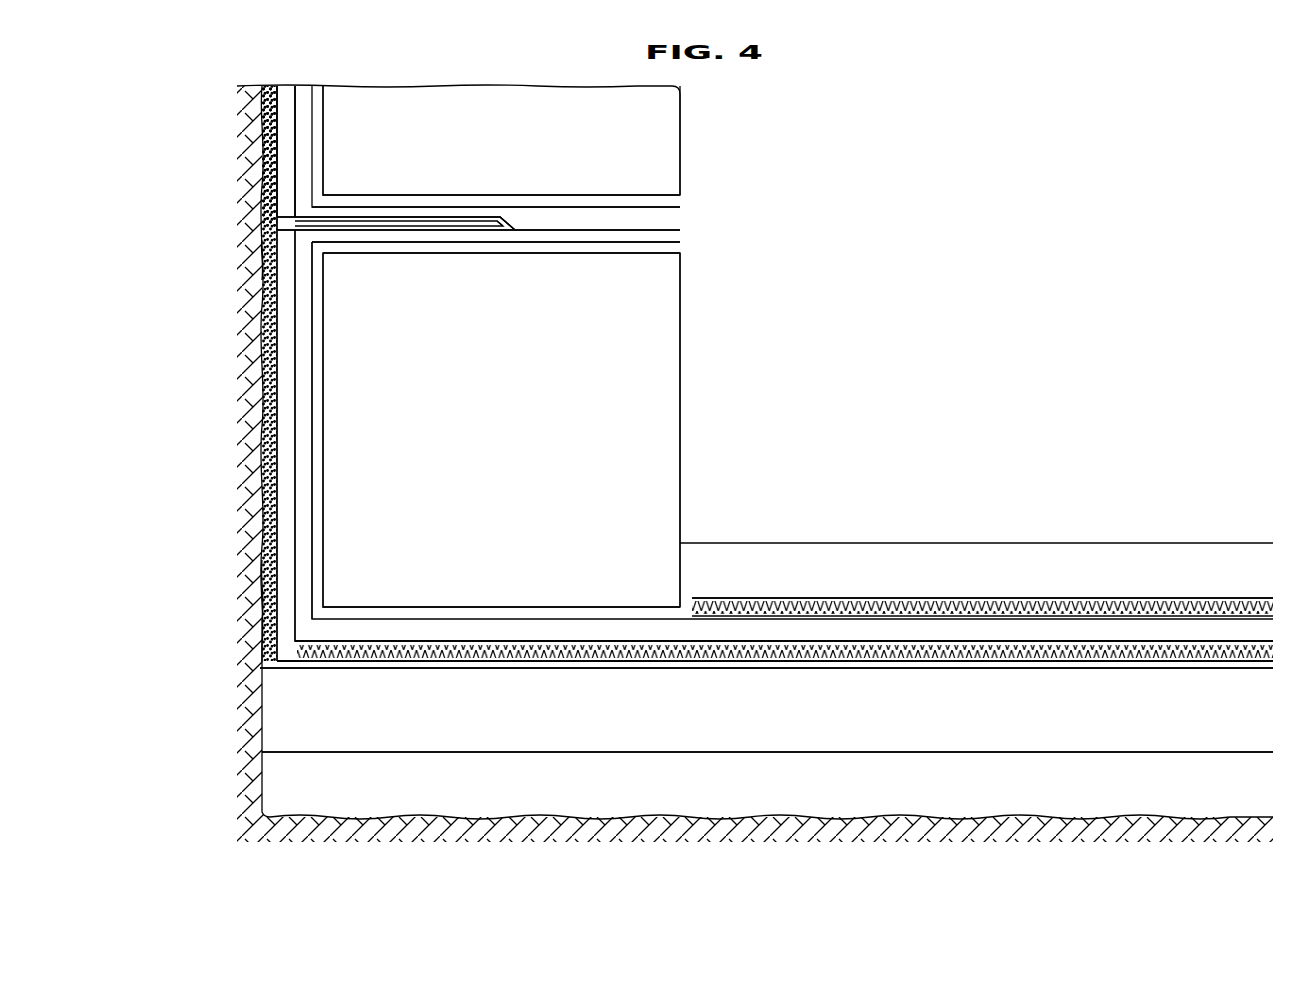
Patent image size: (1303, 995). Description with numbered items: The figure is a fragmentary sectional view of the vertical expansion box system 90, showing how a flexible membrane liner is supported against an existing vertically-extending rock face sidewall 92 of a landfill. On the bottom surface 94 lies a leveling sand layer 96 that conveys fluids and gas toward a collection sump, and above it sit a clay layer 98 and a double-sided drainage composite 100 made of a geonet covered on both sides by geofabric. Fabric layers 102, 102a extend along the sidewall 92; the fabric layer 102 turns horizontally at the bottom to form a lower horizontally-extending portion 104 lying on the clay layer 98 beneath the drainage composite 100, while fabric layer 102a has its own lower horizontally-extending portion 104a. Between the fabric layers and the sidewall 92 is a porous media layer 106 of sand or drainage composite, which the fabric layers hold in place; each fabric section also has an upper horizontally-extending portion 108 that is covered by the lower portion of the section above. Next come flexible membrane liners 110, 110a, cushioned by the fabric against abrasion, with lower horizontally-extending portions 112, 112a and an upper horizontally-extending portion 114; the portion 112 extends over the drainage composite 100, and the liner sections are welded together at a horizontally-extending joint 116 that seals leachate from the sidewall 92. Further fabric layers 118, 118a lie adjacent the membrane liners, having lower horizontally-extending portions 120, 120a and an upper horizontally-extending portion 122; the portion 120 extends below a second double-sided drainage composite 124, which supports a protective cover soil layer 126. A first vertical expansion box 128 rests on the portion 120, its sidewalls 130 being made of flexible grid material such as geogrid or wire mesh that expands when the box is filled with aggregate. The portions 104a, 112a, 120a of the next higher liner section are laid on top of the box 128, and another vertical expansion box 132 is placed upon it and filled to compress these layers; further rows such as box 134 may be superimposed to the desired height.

The vertical expansion box system 90 is at (1162, 292).
The vertically-extending sidewall 92 is at (250, 193).
The bottom surface 94 is at (1007, 818).
The leveling sand layer 96 is at (963, 793).
The clay layer 98 is at (963, 730).
The double-sided drainage composite 100 is at (788, 645).
The fabric layer 102 is at (265, 375).
The fabric layer 102a is at (263, 114).
The lower horizontally-extending portion 104 is at (545, 661).
The lower horizontally-extending portion 104a is at (265, 257).
The porous media layer 106 is at (258, 602).
The upper horizontally-extending portion 108 is at (250, 258).
The flexible membrane liner 110 is at (295, 525).
The flexible membrane liner 110a is at (295, 138).
The lower horizontally-extending portion 112 is at (377, 641).
The lower horizontally-extending portion 112a is at (442, 217).
The upper horizontally-extending portion 114 is at (450, 230).
The joint 116 is at (507, 224).
The fabric layer 118 is at (313, 415).
The fabric layer 118a is at (312, 171).
The lower horizontally-extending portion 120 is at (504, 606).
The lower horizontally-extending portion 120a is at (600, 206).
The upper horizontally-extending portion 122 is at (638, 242).
The second double-sided drainage composite 124 is at (1230, 600).
The protective cover soil layer 126 is at (975, 578).
The first vertical expansion box 128 is at (660, 333).
The sidewalls 130 is at (681, 440).
The vertical expansion box 132 is at (667, 159).
The vertical expansion box 134 is at (567, 253).